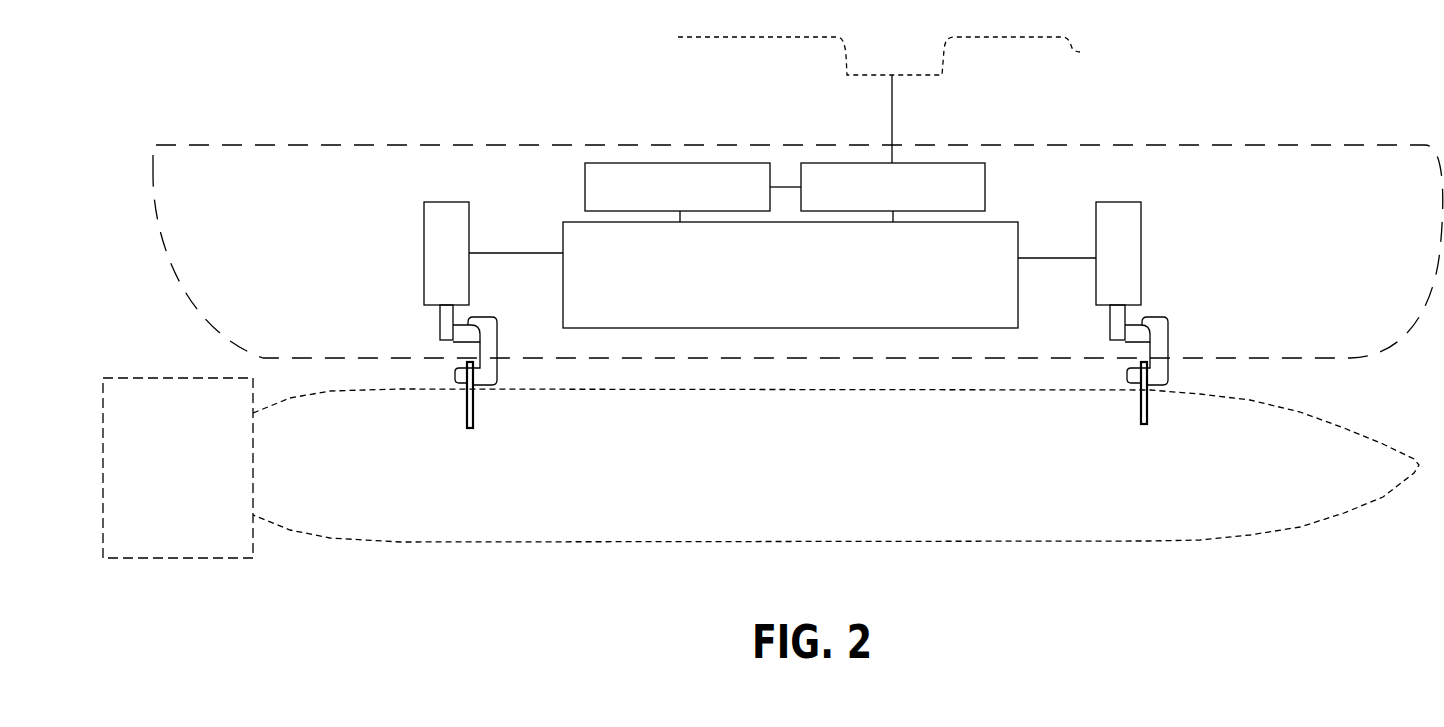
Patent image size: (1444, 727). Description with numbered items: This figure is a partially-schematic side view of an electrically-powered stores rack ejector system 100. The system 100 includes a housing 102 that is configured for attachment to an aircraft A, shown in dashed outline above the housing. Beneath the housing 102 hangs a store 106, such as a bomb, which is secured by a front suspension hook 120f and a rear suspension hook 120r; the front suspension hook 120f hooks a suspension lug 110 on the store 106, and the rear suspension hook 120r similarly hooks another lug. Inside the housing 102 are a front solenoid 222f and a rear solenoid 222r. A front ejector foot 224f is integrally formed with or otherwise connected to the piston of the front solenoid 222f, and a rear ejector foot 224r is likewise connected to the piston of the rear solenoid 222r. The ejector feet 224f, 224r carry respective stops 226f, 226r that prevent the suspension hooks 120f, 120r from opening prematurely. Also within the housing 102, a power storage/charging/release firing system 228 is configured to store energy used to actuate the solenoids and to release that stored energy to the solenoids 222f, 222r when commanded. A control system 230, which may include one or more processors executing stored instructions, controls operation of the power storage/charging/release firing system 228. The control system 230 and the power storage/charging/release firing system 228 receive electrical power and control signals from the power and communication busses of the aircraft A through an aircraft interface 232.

The electrically-powered stores rack ejector system 100 is at (537, 96).
The aircraft A is at (888, 56).
The housing 102 is at (1266, 144).
The store 106 is at (637, 543).
The suspension lug 110 is at (469, 430).
The rear suspension hook 120r is at (497, 376).
The front suspension hook 120f is at (1168, 380).
The rear solenoid 222r is at (424, 240).
The front solenoid 222f is at (1141, 208).
The rear ejector foot 224r is at (440, 320).
The front ejector foot 224f is at (1126, 318).
The stop 226r is at (460, 342).
The stop 226f is at (1133, 340).
The power storage/charging/release firing system 228 is at (1000, 328).
The control system 230 is at (745, 163).
The aircraft interface 232 is at (972, 163).